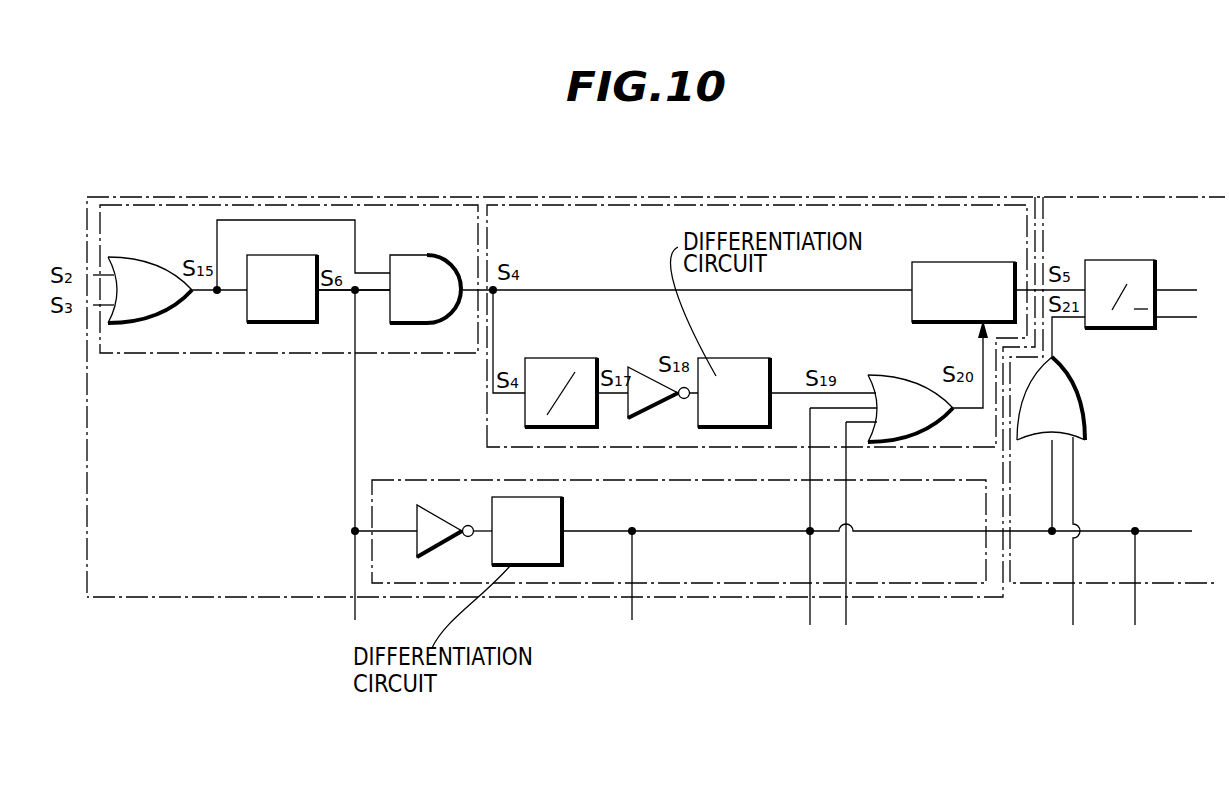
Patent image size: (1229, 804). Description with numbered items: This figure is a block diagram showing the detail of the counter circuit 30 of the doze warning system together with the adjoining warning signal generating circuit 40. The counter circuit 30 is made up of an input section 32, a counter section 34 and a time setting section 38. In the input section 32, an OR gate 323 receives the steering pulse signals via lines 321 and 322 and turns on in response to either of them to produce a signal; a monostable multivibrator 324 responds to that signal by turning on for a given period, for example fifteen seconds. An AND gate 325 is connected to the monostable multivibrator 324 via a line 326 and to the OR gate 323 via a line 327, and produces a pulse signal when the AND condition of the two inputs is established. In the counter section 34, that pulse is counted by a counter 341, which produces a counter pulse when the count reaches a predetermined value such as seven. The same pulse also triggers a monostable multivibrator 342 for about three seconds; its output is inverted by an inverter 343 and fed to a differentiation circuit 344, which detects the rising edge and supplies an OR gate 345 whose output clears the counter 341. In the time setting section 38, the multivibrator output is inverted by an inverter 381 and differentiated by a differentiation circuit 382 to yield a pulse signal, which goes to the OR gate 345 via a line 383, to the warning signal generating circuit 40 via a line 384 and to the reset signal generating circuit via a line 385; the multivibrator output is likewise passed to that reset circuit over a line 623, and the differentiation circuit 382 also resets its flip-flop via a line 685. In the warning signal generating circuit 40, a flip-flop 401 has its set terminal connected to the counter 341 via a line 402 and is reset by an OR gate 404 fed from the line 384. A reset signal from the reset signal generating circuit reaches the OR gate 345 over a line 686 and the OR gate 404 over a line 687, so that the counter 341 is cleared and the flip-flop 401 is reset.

The counter circuit 30 is at (591, 597).
The input section 32 is at (295, 205).
The counter section 34 is at (746, 205).
The time setting section 38 is at (517, 583).
The warning signal generating circuit 40 is at (1140, 197).
The line 321 is at (97, 273).
The line 322 is at (103, 307).
The OR gate 323 is at (131, 327).
The monostable multivibrator 324 is at (283, 322).
The AND gate 325 is at (426, 323).
The line 326 is at (373, 291).
The line 327 is at (240, 220).
The counter 341 is at (966, 262).
The monostable multivibrator 342 is at (567, 358).
The inverter 343 is at (653, 367).
The differentiation circuit 344 is at (745, 358).
The OR gate 345 is at (915, 375).
The inverter 381 is at (433, 505).
The differentiation circuit 382 is at (546, 497).
The line 383 is at (809, 500).
The line 384 is at (916, 531).
The line 385 is at (634, 561).
The flip-flop 401 is at (1129, 273).
The line 402 is at (1047, 287).
The OR gate 404 is at (1083, 388).
The line 623 is at (353, 429).
The line 685 is at (1137, 565).
The line 686 is at (848, 566).
The line 687 is at (1075, 490).